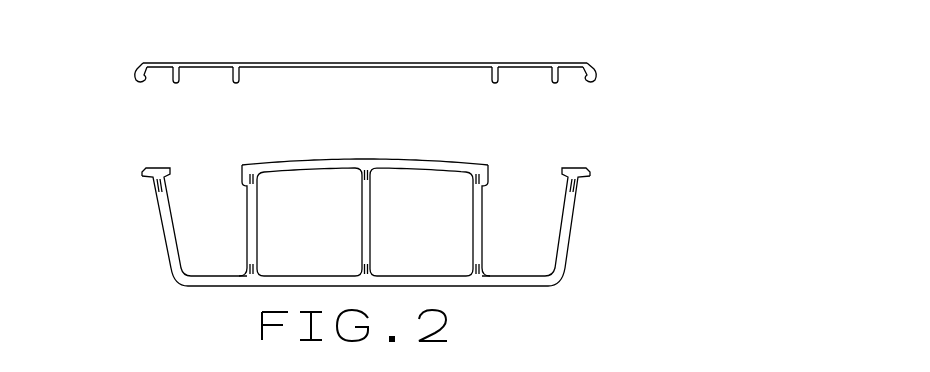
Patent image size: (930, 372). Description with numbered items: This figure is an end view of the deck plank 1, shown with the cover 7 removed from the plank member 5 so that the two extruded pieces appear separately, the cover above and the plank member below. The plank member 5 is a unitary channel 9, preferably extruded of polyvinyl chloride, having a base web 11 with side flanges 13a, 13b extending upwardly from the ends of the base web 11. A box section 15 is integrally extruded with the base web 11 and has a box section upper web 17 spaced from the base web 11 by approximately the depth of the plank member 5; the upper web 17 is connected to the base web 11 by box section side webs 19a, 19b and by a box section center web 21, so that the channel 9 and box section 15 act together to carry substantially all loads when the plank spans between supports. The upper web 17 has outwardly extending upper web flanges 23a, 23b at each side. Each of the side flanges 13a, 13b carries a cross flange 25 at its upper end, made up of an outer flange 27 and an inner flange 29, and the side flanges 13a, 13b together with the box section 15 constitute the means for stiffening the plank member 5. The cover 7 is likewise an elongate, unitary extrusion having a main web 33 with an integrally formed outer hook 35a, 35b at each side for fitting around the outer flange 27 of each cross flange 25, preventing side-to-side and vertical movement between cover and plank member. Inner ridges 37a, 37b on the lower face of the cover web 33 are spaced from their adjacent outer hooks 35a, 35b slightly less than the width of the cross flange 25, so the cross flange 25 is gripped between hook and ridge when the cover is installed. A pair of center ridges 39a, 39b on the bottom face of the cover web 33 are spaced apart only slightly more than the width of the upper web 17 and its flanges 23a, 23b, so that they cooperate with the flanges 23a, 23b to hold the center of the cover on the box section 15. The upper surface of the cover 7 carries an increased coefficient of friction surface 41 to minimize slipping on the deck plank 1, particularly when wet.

The deck plank 1 is at (666, 288).
The plank member 5 is at (548, 292).
The cover 7 is at (514, 56).
The channel 9 is at (194, 291).
The base web 11 is at (500, 276).
The side flange 13a is at (165, 235).
The side flange 13b is at (566, 230).
The box section 15 is at (300, 189).
The box section upper web 17 is at (386, 159).
The box section side web 19a is at (259, 228).
The box section side web 19b is at (482, 232).
The box section center web 21 is at (371, 234).
The upper web flange 23a is at (238, 183).
The upper web flange 23b is at (488, 179).
The cross flange 25 is at (134, 161).
The outer flange 27 is at (142, 182).
The inner flange 29 is at (165, 179).
The main web 33 is at (270, 63).
The outer hook 35a is at (134, 73).
The outer hook 35b is at (598, 66).
The inner ridge 37a is at (179, 84).
The inner ridge 37b is at (553, 84).
The center ridge 39a is at (239, 84).
The center ridge 39b is at (493, 84).
The increased coefficient of friction surface 41 is at (340, 63).